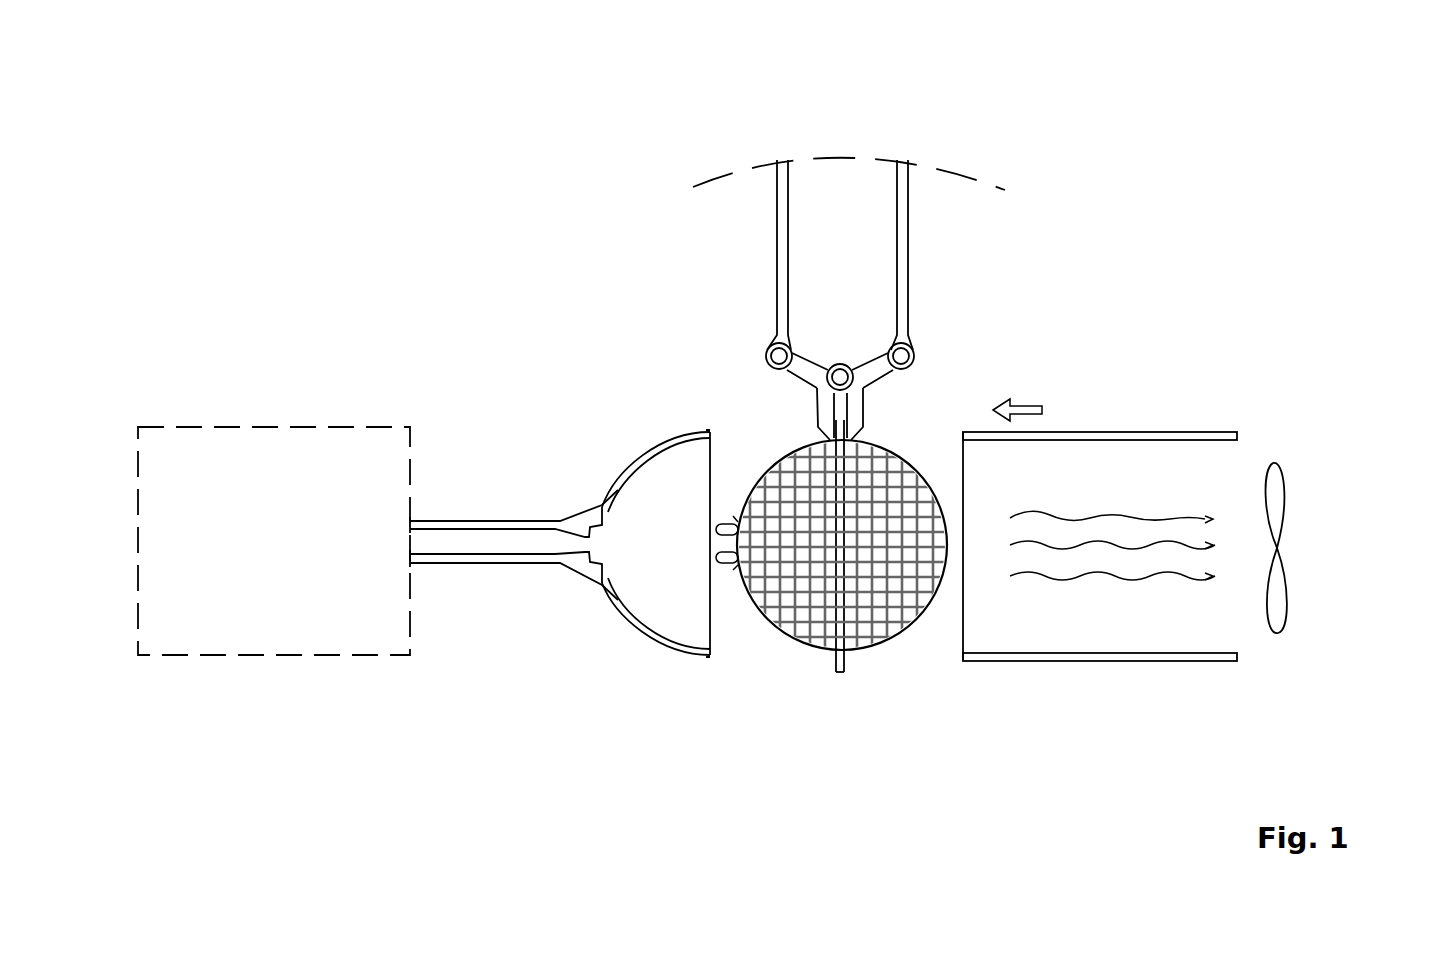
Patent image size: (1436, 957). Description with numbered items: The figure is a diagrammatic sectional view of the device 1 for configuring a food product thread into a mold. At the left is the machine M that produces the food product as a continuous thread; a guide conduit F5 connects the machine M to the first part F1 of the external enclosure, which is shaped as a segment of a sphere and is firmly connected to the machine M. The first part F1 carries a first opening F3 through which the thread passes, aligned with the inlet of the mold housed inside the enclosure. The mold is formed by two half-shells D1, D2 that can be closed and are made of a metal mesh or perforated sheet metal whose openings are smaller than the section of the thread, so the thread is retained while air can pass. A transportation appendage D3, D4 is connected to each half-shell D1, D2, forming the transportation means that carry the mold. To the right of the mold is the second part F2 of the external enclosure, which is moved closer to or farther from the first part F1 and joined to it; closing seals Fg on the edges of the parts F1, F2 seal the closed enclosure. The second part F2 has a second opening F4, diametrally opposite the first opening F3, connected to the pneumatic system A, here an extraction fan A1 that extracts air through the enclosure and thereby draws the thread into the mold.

The device 1 is at (378, 190).
The machine M is at (274, 475).
The guide conduit F5 is at (470, 522).
The first part of the external enclosure F1 is at (645, 458).
The first opening F3 is at (558, 545).
The closing seals Fg is at (722, 428).
The transportation appendage D4 is at (782, 285).
The transportation appendage D3 is at (900, 283).
The half-shell D1 is at (835, 606).
The half-shell D2 is at (885, 605).
The second part of the external enclosure F2 is at (1101, 432).
The second opening F4 is at (1253, 453).
The pneumatic system A is at (1340, 560).
The extraction fan A1 is at (1276, 592).